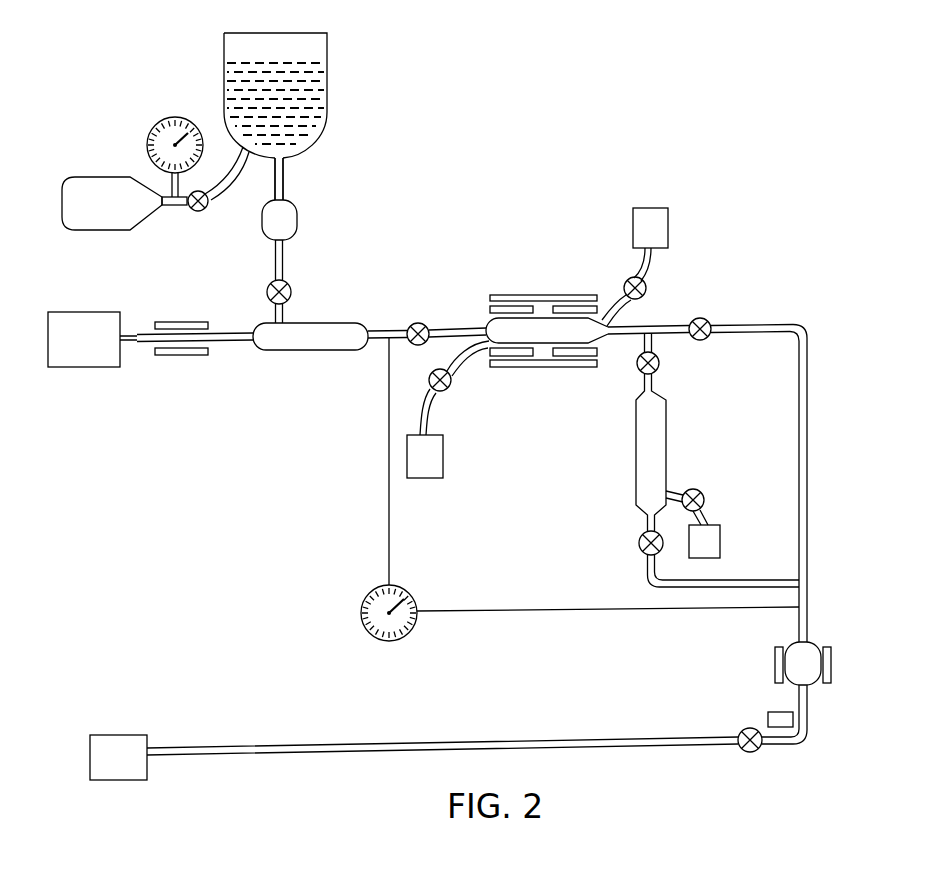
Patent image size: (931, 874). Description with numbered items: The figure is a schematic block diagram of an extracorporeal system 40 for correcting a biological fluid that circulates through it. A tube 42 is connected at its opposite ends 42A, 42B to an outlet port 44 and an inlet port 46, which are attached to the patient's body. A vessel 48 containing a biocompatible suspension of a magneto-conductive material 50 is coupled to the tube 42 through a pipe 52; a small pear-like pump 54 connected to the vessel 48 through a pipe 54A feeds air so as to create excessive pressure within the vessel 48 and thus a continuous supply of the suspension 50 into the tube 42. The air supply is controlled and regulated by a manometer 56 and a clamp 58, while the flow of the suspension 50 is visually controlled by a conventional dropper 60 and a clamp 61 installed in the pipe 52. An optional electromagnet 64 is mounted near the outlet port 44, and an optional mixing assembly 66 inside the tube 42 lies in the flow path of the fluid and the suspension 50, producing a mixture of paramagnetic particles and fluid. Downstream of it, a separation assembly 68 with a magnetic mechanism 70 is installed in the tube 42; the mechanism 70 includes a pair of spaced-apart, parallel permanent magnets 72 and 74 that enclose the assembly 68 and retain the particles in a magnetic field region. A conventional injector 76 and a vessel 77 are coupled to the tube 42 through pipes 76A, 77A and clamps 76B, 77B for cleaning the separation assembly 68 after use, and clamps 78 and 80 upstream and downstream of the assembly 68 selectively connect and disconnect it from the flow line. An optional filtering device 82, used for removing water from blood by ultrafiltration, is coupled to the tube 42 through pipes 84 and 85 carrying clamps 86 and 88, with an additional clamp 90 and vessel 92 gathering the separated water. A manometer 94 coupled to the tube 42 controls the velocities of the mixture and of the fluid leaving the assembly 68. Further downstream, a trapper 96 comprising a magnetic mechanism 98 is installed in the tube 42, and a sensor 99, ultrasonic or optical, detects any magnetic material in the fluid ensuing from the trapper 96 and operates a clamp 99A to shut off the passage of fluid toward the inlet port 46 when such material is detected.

The extracorporeal system 40 is at (640, 116).
The tube 42 is at (232, 342).
The tube end 42A is at (137, 342).
The tube end 42B is at (167, 758).
The outlet port 44 is at (84, 322).
The inlet port 46 is at (113, 735).
The vessel 48 is at (327, 52).
The suspension of magneto-conductive material 50 is at (293, 125).
The pipe 52 is at (290, 183).
The pear-like pump 54 is at (83, 190).
The pipe 54A is at (168, 206).
The manometer 56 is at (173, 117).
The clamp 58 is at (199, 212).
The dropper 60 is at (297, 218).
The clamp 61 is at (292, 291).
The electromagnet 64 is at (187, 353).
The mixing assembly 66 is at (318, 362).
The separation assembly 68 is at (588, 327).
The magnetic mechanism 70 is at (547, 319).
The permanent magnet 72 is at (530, 310).
The permanent magnet 74 is at (528, 357).
The injector 76 is at (647, 208).
The pipe 76A is at (653, 267).
The clamp 76B is at (647, 290).
The vessel 77 is at (422, 480).
The pipe 77A is at (465, 365).
The clamp 77B is at (429, 380).
The clamp 78 is at (419, 322).
The clamp 80 is at (710, 319).
The filtering device 82 is at (733, 465).
The pipe 84 is at (662, 395).
The pipe 85 is at (775, 580).
The clamp 86 is at (641, 371).
The clamp 88 is at (640, 555).
The clamp 90 is at (697, 489).
The vessel 92 is at (708, 541).
The manometer 94 is at (402, 640).
The trapper 96 is at (818, 645).
The magnetic mechanism 98 is at (833, 665).
The sensor 99 is at (793, 726).
The clamp 99A is at (746, 728).